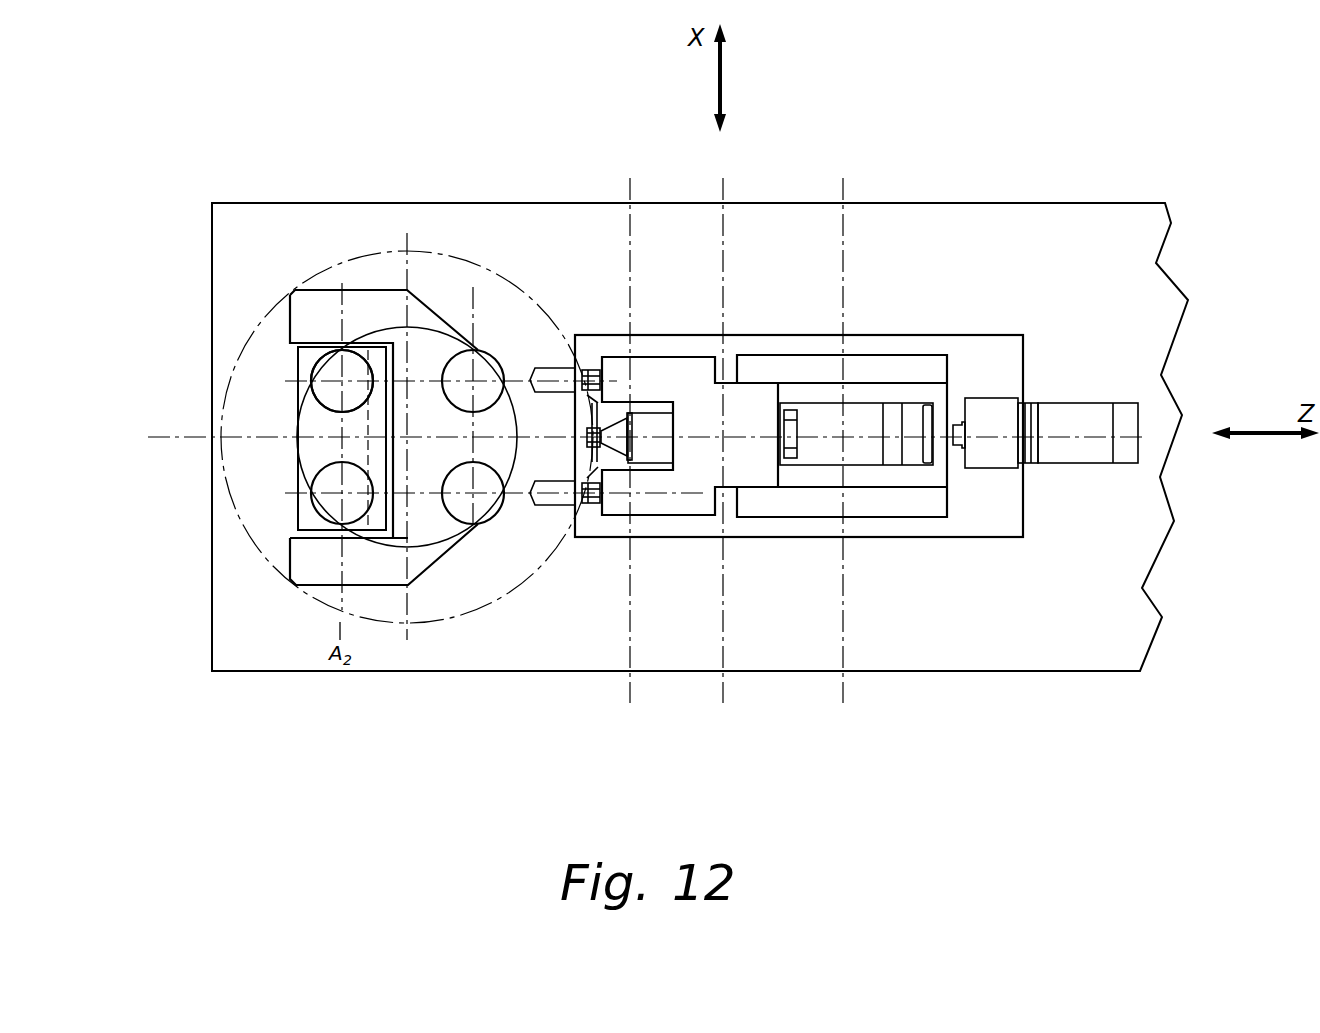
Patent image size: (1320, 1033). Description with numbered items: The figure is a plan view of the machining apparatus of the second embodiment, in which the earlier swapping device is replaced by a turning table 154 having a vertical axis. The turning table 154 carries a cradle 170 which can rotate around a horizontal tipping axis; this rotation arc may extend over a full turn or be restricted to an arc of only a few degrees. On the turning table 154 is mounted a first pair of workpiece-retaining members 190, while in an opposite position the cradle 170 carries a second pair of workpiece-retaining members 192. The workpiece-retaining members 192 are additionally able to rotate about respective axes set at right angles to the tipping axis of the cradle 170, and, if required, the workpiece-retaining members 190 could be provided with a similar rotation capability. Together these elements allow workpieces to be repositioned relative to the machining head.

The turning table 154 is at (420, 538).
The cradle 170 is at (305, 364).
The first pair of workpiece-retaining members 190 is at (477, 345).
The second pair of workpiece-retaining members 192 is at (333, 508).